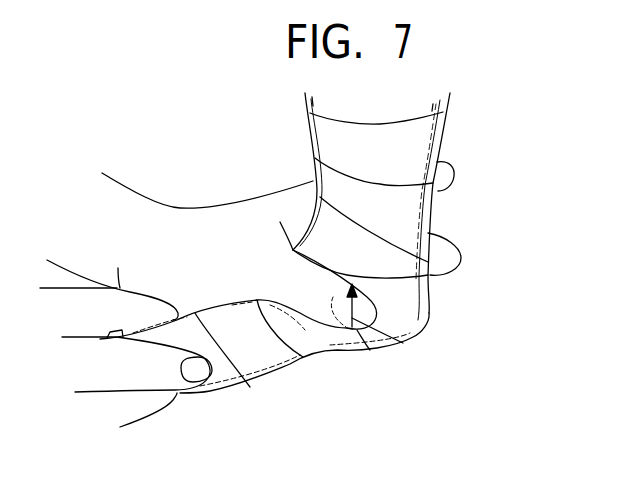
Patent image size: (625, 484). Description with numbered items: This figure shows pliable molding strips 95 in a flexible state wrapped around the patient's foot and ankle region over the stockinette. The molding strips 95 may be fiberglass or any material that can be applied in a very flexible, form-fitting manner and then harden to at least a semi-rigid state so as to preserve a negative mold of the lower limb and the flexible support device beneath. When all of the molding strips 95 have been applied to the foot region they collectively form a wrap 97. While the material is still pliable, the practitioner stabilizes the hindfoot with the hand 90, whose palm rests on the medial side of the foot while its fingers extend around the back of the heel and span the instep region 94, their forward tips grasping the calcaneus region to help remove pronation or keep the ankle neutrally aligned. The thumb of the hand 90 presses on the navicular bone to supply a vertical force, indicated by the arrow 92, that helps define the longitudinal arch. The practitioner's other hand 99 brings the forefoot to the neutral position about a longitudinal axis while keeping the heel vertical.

The hand 90 is at (227, 223).
The arrow 92 is at (411, 345).
The instep region 94 is at (428, 275).
The pliable molding strips 95 is at (392, 150).
The wrap 97 is at (417, 218).
The other hand 99 is at (67, 363).